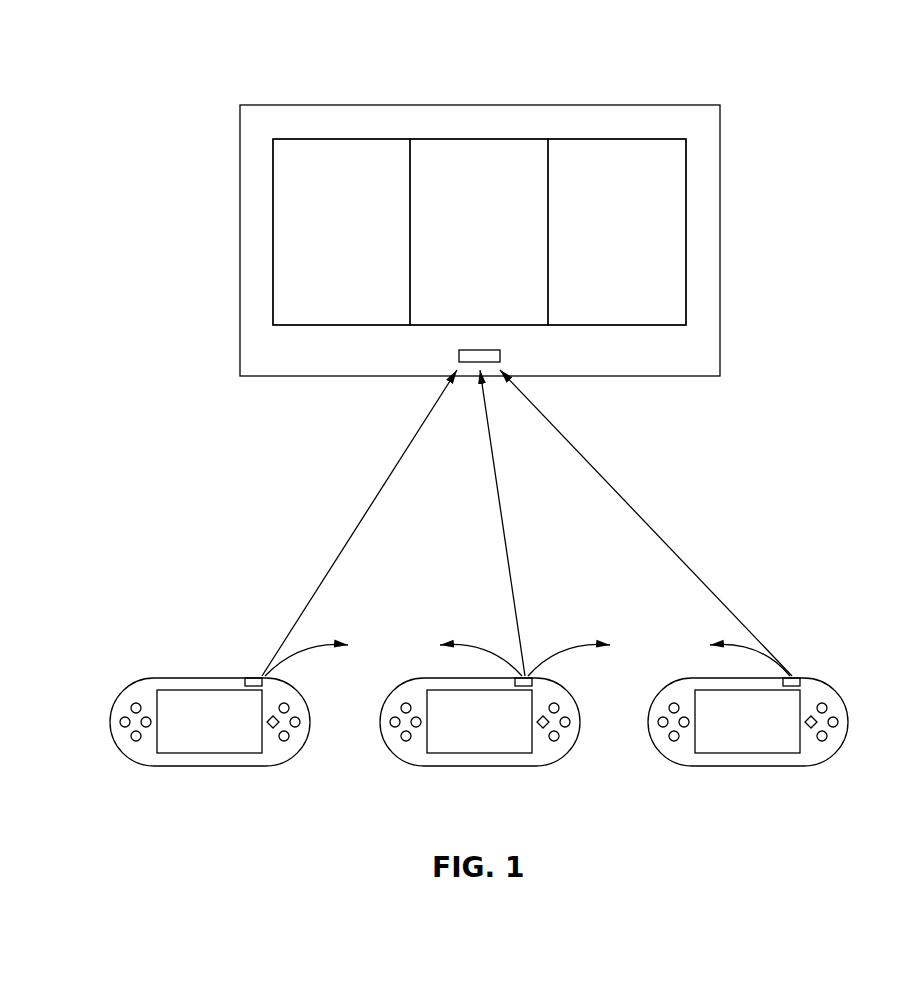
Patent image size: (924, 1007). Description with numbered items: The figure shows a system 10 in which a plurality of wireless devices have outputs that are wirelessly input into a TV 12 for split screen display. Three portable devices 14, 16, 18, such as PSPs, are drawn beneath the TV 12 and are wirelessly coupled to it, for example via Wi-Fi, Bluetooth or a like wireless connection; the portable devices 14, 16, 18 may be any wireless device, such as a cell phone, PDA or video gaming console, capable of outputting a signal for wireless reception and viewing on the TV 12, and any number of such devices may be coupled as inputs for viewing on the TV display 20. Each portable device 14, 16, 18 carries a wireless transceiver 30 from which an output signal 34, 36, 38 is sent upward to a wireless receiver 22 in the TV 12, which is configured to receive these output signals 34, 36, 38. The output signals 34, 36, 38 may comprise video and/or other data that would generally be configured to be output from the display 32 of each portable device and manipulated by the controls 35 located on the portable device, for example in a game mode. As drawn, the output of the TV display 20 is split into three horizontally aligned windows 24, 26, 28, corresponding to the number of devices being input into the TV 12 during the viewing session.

The system 10 is at (190, 40).
The TV 12 is at (721, 340).
The portable device 14 is at (122, 750).
The portable device 16 is at (392, 750).
The portable device 18 is at (660, 750).
The TV display 20 is at (687, 276).
The wireless receiver 22 is at (501, 356).
The window 24 is at (346, 170).
The window 26 is at (502, 168).
The window 28 is at (610, 158).
The wireless transceiver 30 is at (250, 678).
The display 32 is at (185, 754).
The output signal 34 is at (360, 520).
The controls 35 is at (296, 716).
The output signal 36 is at (507, 543).
The output signal 38 is at (656, 530).